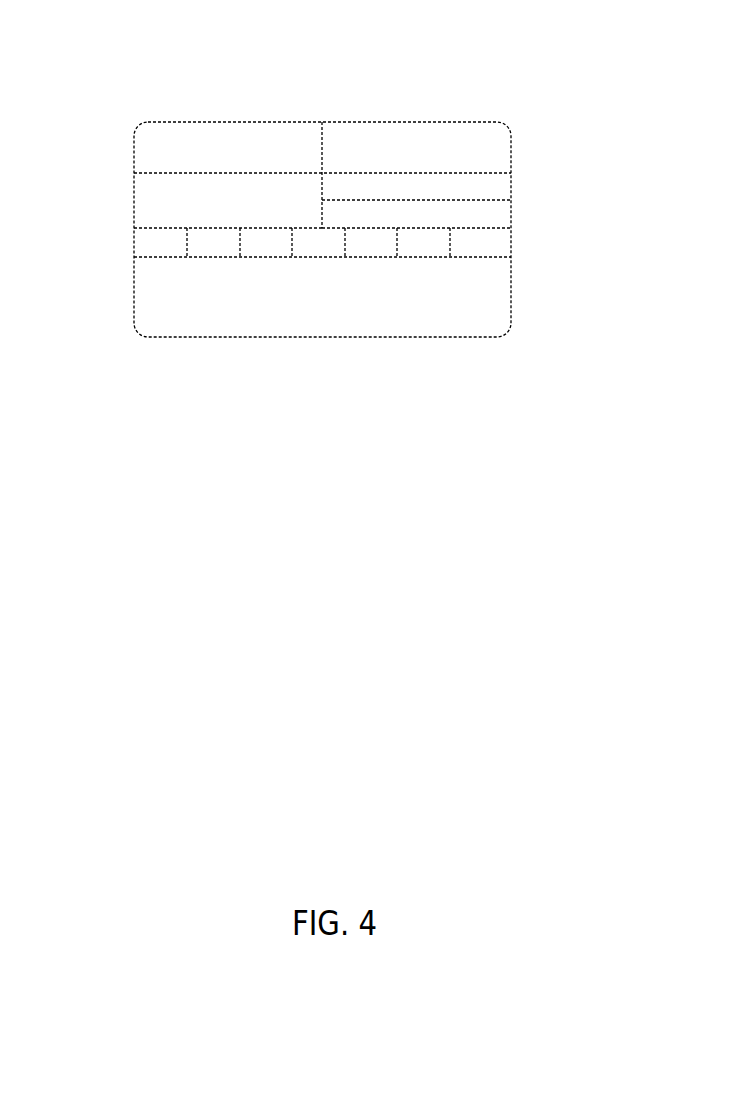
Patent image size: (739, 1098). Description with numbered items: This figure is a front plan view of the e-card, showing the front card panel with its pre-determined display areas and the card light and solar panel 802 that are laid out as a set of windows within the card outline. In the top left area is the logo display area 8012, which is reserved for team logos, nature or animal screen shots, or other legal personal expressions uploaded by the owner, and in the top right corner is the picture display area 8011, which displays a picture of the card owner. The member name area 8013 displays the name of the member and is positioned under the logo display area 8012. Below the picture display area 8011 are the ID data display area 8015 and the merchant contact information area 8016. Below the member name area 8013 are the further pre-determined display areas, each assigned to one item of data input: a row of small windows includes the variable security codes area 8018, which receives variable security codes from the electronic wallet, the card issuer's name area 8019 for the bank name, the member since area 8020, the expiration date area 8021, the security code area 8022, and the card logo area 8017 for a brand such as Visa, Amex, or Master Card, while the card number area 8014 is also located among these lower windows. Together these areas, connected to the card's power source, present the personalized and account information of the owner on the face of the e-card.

The card light and solar panel 802 is at (473, 248).
The picture display area 8011 is at (432, 140).
The logo display area 8012 is at (223, 148).
The member name area 8013 is at (155, 202).
The card number area 8014 is at (488, 318).
The ID data display area 8015 is at (503, 188).
The merchant contact information area 8016 is at (503, 222).
The card logo area 8017 is at (155, 248).
The variable security codes area 8018 is at (210, 248).
The card issuer's name area 8019 is at (258, 248).
The member since area 8020 is at (310, 248).
The expiration date area 8021 is at (367, 240).
The security code area 8022 is at (418, 248).